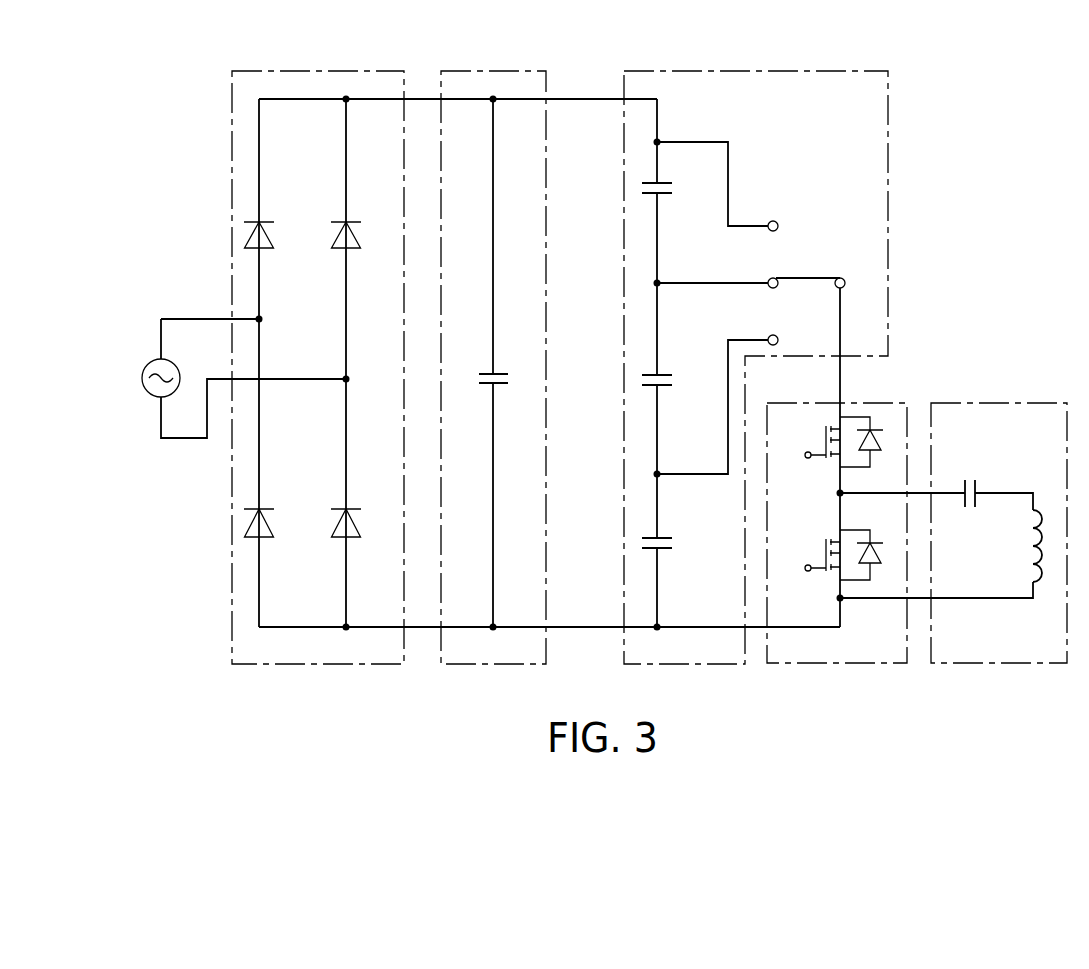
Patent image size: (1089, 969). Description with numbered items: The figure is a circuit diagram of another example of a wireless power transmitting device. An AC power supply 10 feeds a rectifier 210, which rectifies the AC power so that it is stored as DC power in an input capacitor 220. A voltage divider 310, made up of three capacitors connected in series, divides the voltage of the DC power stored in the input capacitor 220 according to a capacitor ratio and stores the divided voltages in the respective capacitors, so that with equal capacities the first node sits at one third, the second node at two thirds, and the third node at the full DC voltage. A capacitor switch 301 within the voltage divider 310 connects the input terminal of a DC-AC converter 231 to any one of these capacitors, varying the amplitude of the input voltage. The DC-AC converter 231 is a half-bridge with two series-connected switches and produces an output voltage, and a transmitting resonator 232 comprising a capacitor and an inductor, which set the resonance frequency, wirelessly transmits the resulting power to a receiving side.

The AC power supply 10 is at (147, 362).
The rectifier 210 is at (362, 71).
The input capacitor 220 is at (502, 71).
The voltage divider 310 is at (801, 71).
The capacitor switch 301 is at (807, 278).
The DC-AC converter 231 is at (888, 390).
The transmitting resonator 232 is at (1025, 403).